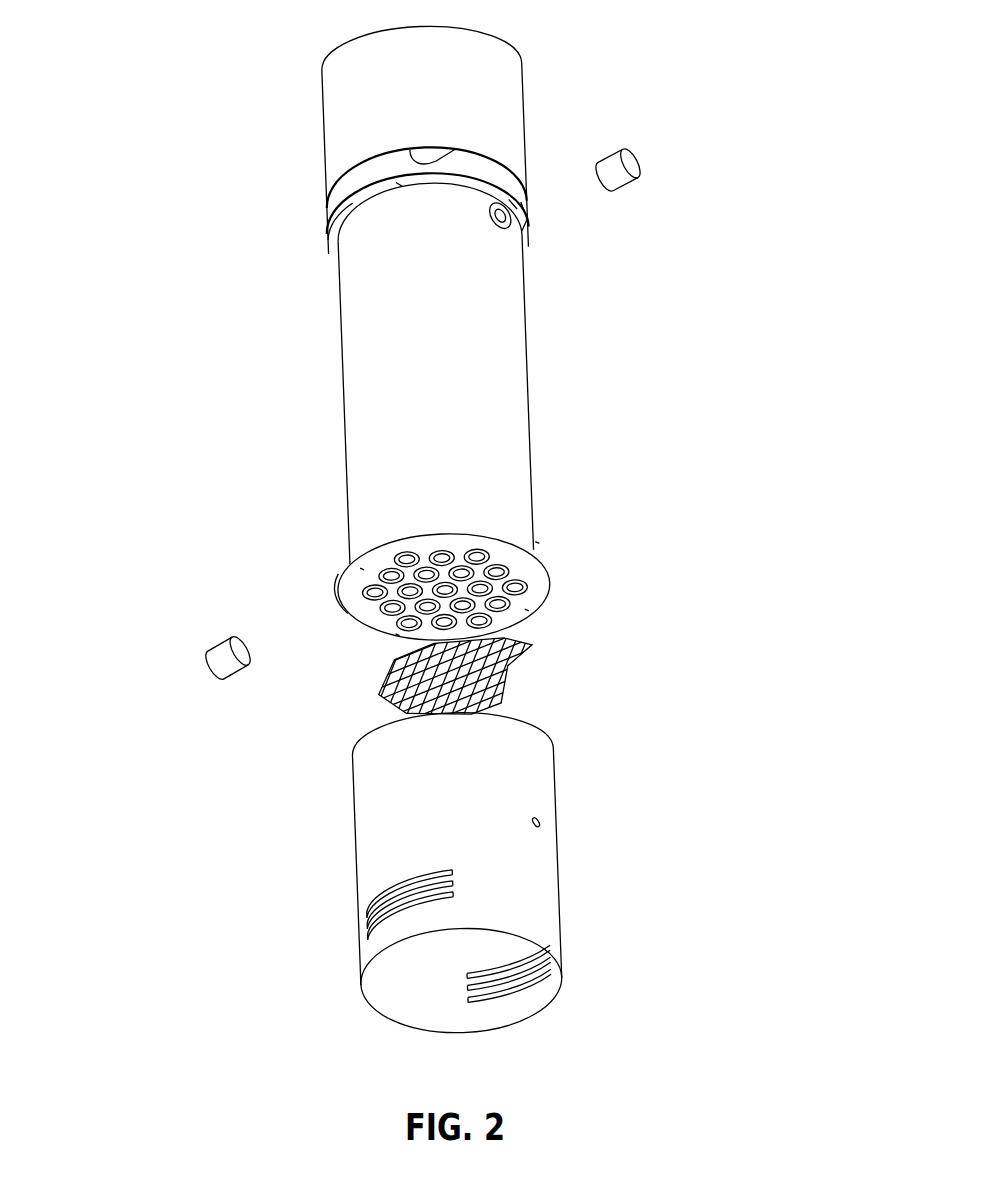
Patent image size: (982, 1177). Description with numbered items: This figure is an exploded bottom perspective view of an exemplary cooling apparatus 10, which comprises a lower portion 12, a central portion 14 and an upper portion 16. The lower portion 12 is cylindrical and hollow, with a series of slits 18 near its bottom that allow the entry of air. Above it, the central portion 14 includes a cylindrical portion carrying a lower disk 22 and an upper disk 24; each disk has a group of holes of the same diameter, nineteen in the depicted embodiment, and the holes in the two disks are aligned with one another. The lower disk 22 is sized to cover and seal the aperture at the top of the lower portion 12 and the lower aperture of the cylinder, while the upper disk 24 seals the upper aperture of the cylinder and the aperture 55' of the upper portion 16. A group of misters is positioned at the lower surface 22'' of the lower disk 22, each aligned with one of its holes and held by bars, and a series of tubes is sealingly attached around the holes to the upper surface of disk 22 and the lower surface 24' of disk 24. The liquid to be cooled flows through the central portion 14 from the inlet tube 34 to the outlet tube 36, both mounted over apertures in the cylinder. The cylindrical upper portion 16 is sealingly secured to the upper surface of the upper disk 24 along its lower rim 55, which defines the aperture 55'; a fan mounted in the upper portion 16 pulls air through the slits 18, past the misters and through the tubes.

The cooling apparatus 10 is at (320, 487).
The lower portion 12 is at (337, 831).
The central portion 14 is at (648, 423).
The upper portion 16 is at (313, 120).
The slits 18 is at (368, 908).
The lower disk 22 is at (550, 587).
The lower surface of disk 22 22'' is at (255, 595).
The upper disk 24 is at (618, 208).
The lower surface of disk 24 24' is at (253, 275).
The inlet tube 34 is at (630, 162).
The outlet tube 36 is at (222, 666).
The lower rim of upper portion 55 is at (329, 185).
The aperture 55' is at (355, 224).